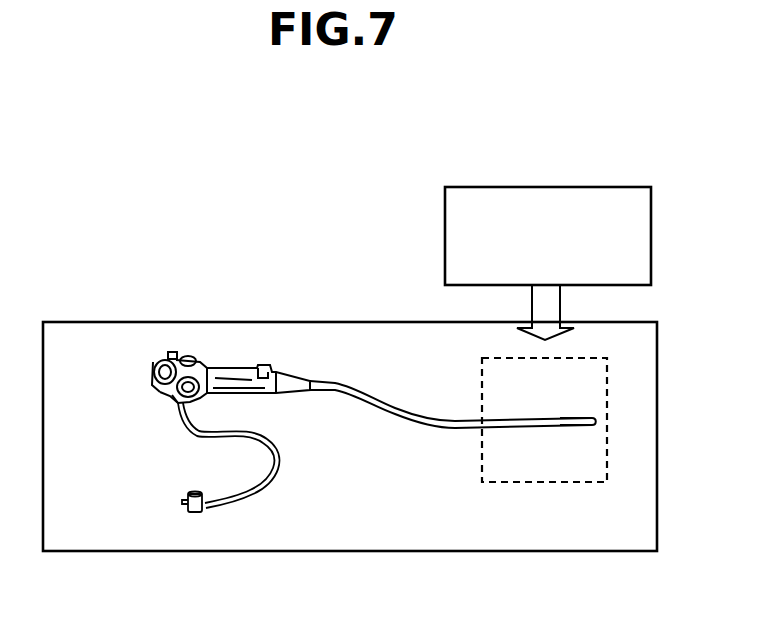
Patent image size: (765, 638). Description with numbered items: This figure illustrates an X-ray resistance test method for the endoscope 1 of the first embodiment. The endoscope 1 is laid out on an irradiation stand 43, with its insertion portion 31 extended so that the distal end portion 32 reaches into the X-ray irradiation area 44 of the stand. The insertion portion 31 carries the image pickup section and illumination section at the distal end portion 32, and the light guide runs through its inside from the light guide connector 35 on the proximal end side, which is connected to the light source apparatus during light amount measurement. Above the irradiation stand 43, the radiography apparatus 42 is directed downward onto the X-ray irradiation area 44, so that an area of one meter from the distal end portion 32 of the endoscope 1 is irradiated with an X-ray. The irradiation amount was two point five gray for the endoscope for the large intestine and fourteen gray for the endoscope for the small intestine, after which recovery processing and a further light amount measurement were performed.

The endoscope 1 is at (230, 365).
The insertion portion 31 is at (443, 428).
The distal end portion 32 is at (578, 425).
The light guide connector 35 is at (205, 512).
The radiography apparatus 42 is at (553, 187).
The irradiation stand 43 is at (657, 362).
The X-ray irradiation area 44 is at (608, 452).